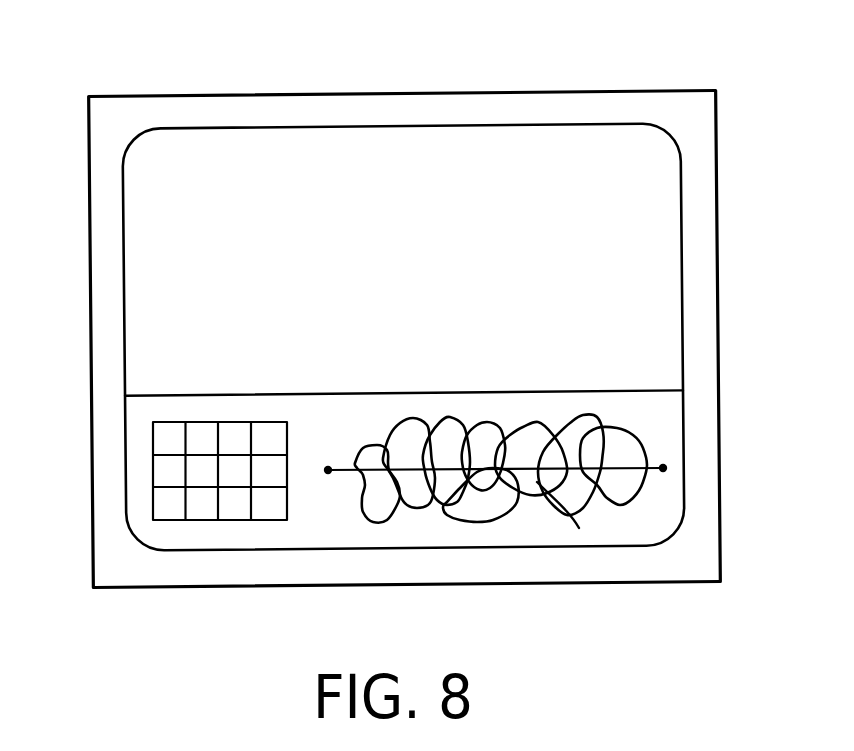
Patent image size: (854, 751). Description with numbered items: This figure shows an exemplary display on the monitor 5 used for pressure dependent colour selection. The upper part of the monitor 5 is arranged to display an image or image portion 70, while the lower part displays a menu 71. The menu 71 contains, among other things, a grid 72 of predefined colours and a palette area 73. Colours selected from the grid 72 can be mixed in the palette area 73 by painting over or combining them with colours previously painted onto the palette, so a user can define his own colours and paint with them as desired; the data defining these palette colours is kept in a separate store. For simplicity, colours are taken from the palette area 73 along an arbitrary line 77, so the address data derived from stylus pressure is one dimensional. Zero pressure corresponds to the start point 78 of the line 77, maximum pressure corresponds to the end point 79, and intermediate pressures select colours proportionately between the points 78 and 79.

The monitor 5 is at (122, 115).
The image portion 70 is at (664, 270).
The menu 71 is at (130, 490).
The grid of predefined colours 72 is at (203, 510).
The palette area 73 is at (650, 429).
The line 77 is at (579, 528).
The start point 78 is at (328, 470).
The end point 79 is at (663, 468).